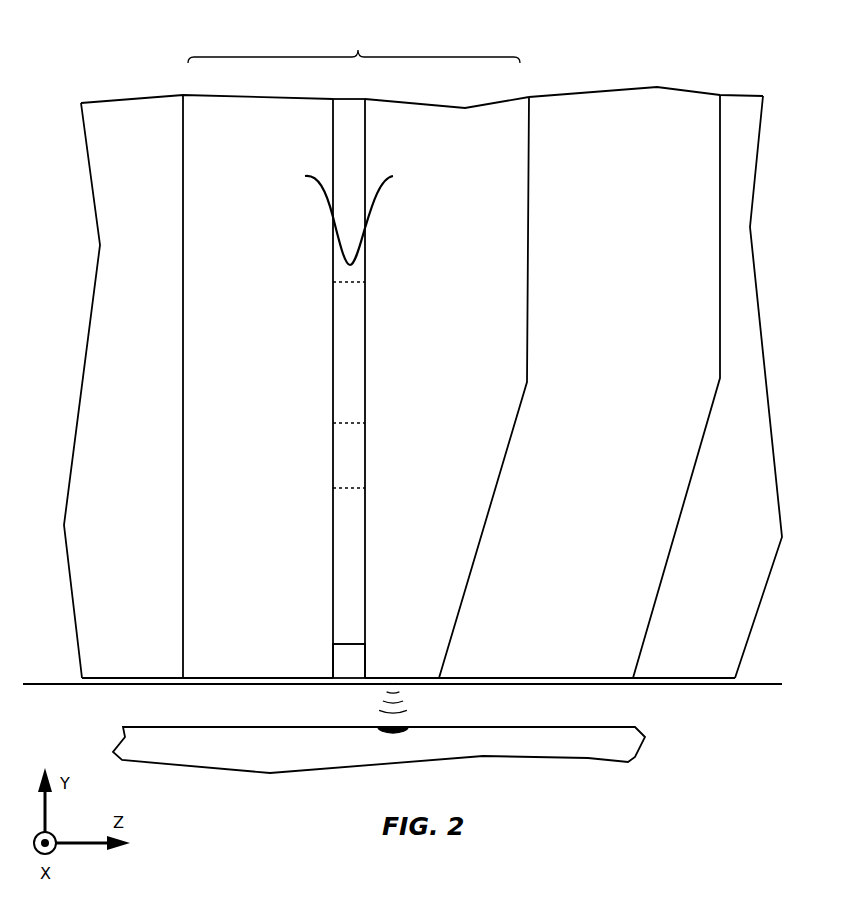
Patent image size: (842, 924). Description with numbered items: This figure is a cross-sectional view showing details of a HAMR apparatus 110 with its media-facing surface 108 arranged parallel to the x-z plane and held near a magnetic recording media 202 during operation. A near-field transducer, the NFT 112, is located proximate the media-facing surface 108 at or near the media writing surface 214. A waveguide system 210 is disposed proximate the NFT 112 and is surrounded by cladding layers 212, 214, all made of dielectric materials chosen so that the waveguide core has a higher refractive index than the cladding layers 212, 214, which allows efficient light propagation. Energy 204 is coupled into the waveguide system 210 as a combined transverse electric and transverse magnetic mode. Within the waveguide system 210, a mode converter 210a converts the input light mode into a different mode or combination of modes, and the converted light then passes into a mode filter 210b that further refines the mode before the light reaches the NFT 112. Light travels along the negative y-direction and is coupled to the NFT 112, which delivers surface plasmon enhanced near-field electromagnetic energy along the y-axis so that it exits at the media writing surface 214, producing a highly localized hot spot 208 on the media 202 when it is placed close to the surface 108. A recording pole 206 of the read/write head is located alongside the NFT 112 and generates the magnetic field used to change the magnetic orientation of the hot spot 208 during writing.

The acoustic transducer assembly 110 is at (354, 41).
The media writing surface / cladding layer 214 is at (205, 97).
The waveguide system 210 is at (312, 393).
The cladding layer 212 is at (395, 113).
The recording pole 206 is at (640, 87).
The energy 204 is at (322, 187).
The mode converter 210a is at (340, 347).
The mode filter 210b is at (340, 531).
The NFT 112 is at (350, 680).
The media-facing surface 108 is at (685, 685).
The magnetic recording media 202 is at (175, 747).
The hot spot 208 is at (395, 733).